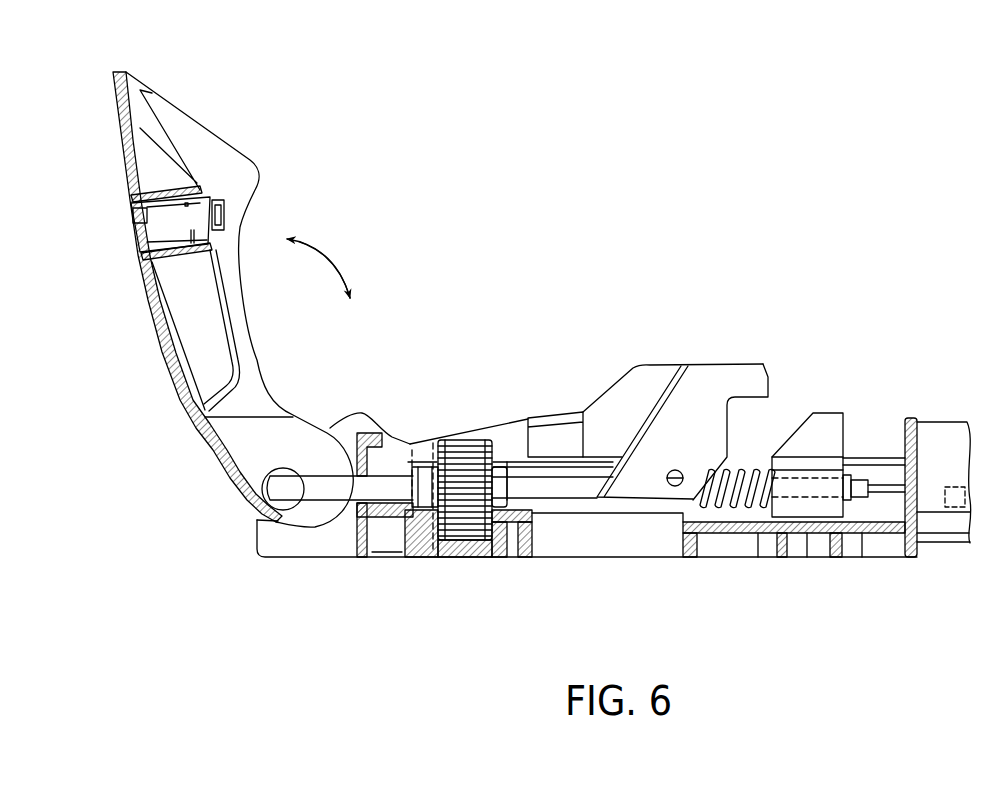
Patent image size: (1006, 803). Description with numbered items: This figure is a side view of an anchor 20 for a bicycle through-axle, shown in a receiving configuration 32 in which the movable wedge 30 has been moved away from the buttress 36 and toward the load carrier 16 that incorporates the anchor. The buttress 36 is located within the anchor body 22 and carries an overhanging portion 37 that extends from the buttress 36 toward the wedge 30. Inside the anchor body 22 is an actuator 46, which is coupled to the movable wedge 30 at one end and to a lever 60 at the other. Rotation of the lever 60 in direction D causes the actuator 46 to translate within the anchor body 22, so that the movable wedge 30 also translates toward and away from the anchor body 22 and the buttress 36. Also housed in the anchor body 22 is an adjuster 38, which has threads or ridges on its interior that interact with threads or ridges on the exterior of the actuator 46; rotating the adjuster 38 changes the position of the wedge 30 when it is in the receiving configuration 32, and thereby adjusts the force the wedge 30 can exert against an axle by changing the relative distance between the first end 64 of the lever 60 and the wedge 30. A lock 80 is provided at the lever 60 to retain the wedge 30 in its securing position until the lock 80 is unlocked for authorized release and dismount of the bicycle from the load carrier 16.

The load carrier 16 is at (937, 427).
The anchor 20 is at (504, 57).
The anchor body 22 is at (619, 357).
The movable wedge 30 is at (823, 413).
The receiving configuration 32 is at (799, 265).
The buttress 36 is at (703, 363).
The overhanging portion 37 is at (760, 366).
The adjuster 38 is at (471, 526).
The actuator 46 is at (563, 492).
The lever 60 is at (194, 122).
The first end 64 is at (253, 497).
The lock 80 is at (132, 231).
The direction D is at (333, 252).